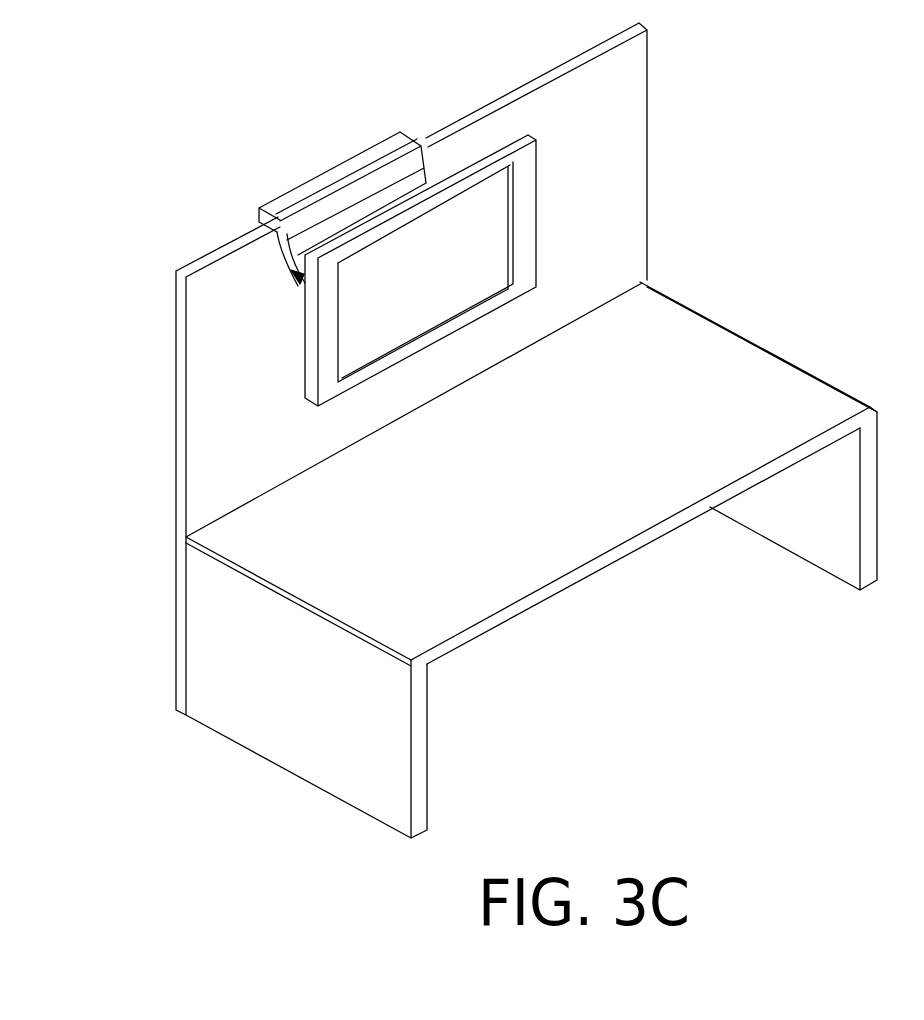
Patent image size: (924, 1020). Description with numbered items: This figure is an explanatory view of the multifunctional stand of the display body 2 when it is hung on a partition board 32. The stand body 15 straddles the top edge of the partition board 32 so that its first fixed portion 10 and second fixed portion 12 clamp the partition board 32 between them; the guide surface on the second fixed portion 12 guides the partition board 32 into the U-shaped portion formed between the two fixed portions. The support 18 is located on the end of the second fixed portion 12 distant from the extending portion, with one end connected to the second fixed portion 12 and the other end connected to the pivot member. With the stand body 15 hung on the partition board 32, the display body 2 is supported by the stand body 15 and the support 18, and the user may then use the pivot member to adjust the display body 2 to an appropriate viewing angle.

The display body 2 is at (487, 200).
The first fixed portion 10 is at (258, 216).
The second fixed portion 12 is at (278, 260).
The stand body 15 is at (302, 140).
The support 18 is at (292, 278).
The partition board 32 is at (640, 161).